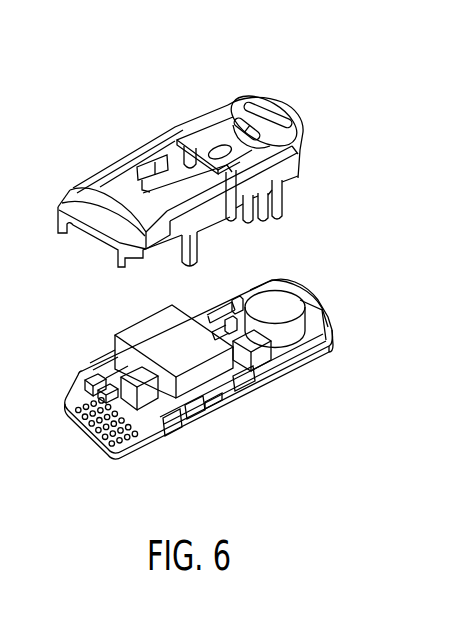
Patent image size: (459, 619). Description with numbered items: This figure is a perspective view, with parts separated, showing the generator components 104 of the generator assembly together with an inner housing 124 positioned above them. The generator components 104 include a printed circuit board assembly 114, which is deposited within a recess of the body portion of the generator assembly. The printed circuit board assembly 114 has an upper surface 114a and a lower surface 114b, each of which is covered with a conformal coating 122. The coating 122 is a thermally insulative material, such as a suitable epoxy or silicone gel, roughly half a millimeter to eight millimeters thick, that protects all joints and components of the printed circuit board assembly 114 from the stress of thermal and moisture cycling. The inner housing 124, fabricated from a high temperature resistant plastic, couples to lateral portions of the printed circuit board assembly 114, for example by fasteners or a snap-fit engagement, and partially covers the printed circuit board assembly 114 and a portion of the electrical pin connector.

The generator components 104 is at (308, 283).
The printed circuit board assembly 114 is at (210, 417).
The upper surface 114a is at (68, 402).
The lower surface 114b is at (135, 450).
The conformal coating 122 is at (323, 302).
The inner housing 124 is at (188, 118).